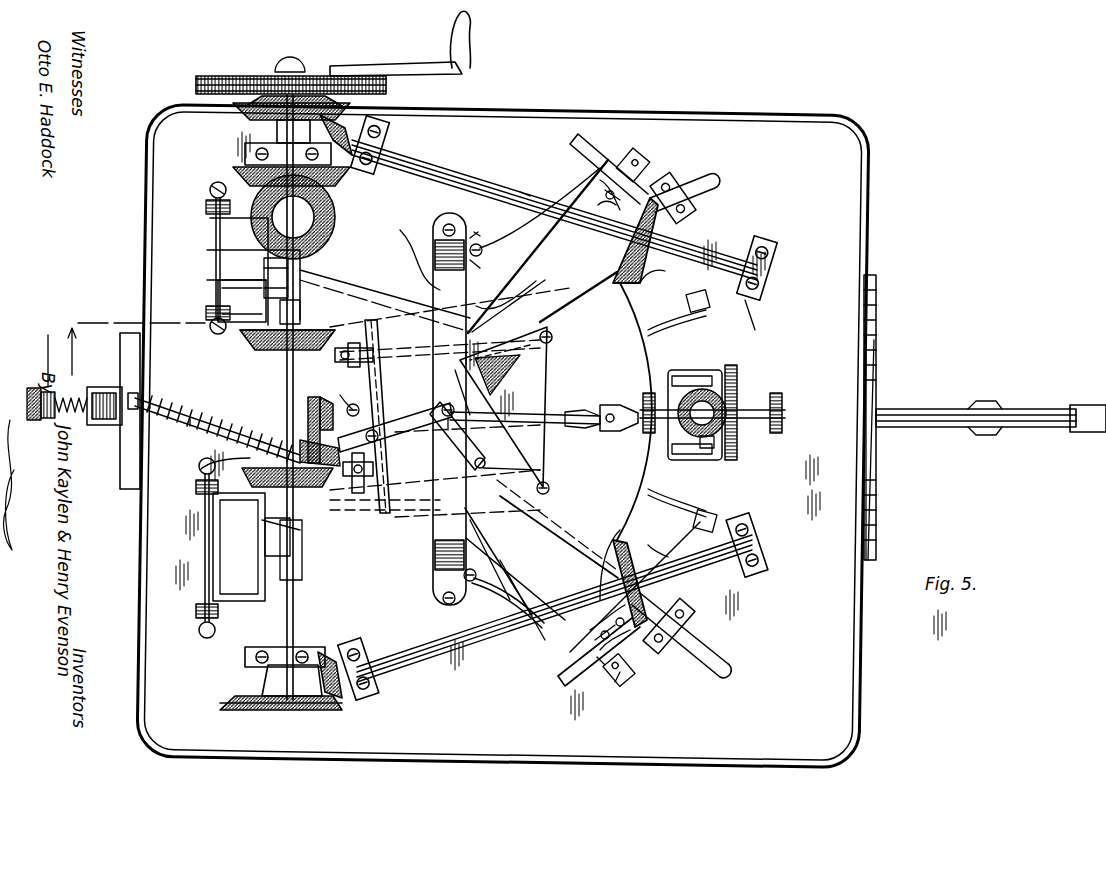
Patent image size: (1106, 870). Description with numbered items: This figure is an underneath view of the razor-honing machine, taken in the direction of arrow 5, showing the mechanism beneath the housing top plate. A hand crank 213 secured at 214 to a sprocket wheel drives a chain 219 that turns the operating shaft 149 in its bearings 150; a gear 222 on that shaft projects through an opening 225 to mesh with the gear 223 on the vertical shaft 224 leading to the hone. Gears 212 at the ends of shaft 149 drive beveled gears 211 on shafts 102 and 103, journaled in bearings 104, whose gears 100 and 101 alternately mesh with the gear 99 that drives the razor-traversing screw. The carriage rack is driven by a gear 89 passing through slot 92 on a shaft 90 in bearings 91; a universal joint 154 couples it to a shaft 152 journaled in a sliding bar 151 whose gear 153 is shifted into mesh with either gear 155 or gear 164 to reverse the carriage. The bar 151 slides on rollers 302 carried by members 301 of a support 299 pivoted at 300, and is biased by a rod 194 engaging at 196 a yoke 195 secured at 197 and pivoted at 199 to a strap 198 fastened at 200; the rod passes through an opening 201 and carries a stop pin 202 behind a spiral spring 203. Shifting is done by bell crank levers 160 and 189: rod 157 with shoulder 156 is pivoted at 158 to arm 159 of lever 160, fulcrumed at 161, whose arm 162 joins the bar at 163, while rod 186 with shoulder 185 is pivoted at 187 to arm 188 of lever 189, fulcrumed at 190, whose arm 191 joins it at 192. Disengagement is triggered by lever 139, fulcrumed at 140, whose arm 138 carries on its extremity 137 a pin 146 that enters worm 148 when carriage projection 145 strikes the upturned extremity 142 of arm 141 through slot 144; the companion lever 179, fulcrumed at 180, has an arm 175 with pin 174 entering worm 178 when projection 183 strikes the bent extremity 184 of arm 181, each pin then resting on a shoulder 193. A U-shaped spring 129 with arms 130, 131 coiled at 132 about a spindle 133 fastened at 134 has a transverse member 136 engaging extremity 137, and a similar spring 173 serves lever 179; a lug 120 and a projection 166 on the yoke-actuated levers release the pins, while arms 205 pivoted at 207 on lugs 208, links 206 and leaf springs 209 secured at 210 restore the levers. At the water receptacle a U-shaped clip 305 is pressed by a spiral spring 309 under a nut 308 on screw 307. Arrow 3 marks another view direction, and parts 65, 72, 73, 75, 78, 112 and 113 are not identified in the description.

The arrow 5 is at (150, 262).
The pin 146 is at (295, 262).
The hand crank 213 is at (418, 70).
The crank securing point 214 is at (300, 62).
The chain 219 is at (215, 76).
The gear 212 is at (258, 76).
The fast gear 222 is at (248, 112).
The bearings 150 is at (275, 148).
The vertically disposed shaft 224 is at (330, 180).
The gear 223 is at (335, 217).
The beveled gear 211 is at (370, 125).
The bearings 104 is at (385, 140).
The opening 225 is at (415, 160).
The shaft 102 is at (525, 192).
The spring arm 131 is at (255, 271).
The spindle fastening 134 is at (210, 182).
The coiled extremities 132 is at (208, 205).
The supporting spindle 133 is at (212, 250).
The free extremity 137 is at (215, 285).
The transverse member 136 is at (264, 268).
The U-shaped spring 129 is at (242, 291).
The spring arm 130 is at (246, 306).
The shoulder 193 is at (213, 512).
The U-shaped spring 173 is at (241, 547).
The pin 174 is at (272, 545).
The opening 201 is at (125, 380).
The U-shaped clip 305 is at (105, 426).
The screw 307 is at (68, 396).
The nut 308 is at (32, 388).
The spiral spring 309 is at (48, 340).
The section line 3 is at (136, 335).
The yoke 195 is at (250, 400).
The rod engagement point 196 is at (195, 412).
The rod 194 is at (195, 428).
The operating shaft 149 is at (287, 347).
The gear 155 is at (278, 352).
The gear 164 is at (305, 490).
The gear 153 is at (308, 410).
The stop pin 202 is at (298, 452).
The spiral spring 203 is at (210, 461).
The short worm 148 is at (307, 313).
The lever arm 175 is at (300, 532).
The worm member 178 is at (309, 550).
The strap fastenings 200 is at (450, 224).
The leaf spring fastening 210 is at (473, 411).
The strap 198 is at (416, 248).
The leaf spring 209 is at (500, 655).
The lever arm 141 is at (540, 210).
The lever arm 138 is at (385, 289).
The pivotal connection 192 is at (385, 282).
The lever 139 is at (504, 289).
The rod 157 is at (542, 246).
The fulcrum 140 is at (510, 306).
The bell crank arm 191 is at (420, 350).
The members 301 is at (450, 402).
The antifrictional rollers 302 is at (349, 450).
The pivotal connection 300 is at (352, 390).
The support 299 is at (394, 416).
The bar 151 is at (380, 410).
The pivotal connection 163 is at (385, 534).
The bell crank arm 162 is at (385, 539).
The fulcrum 190 is at (555, 335).
The bell crank lever 189 is at (520, 355).
The pivotal connection 158 is at (495, 371).
The bell crank arm 188 is at (479, 390).
The bell crank lever 160 is at (567, 484).
The bell crank arm 159 is at (490, 440).
The pivotal connection 187 is at (537, 458).
The shaft 152 is at (555, 412).
The yoke fastening 197 is at (410, 429).
The pivotal connection 199 is at (456, 438).
The universal joint connection 154 is at (596, 426).
The depending bearings 91 is at (645, 400).
The projection 166 is at (640, 412).
The gear 101 is at (619, 552).
The shoulder 156 is at (600, 169).
The arm extremity 142 is at (636, 152).
The link 206 is at (609, 415).
The arm 205 is at (668, 175).
The gear 100 is at (690, 215).
The shoulder 185 is at (710, 615).
The slot 144 is at (599, 670).
The pivotal connection 207 is at (640, 673).
The bent extremity 184 is at (612, 680).
The depending lug 208 is at (628, 690).
The fulcrum 161 is at (559, 537).
The rod 186 is at (541, 550).
The lever 179 is at (501, 561).
The fulcrum 180 is at (493, 560).
The lever arm 181 is at (522, 599).
The shaft 103 is at (606, 587).
The arm 113 is at (700, 376).
The arm 112 is at (690, 454).
The projection 145 is at (690, 305).
The projection 183 is at (695, 518).
The gear 89 is at (735, 372).
The gear 99 is at (725, 430).
The shaft 90 is at (755, 408).
The lug 120 is at (712, 448).
The slot 92 is at (750, 328).
The bracket 73 is at (880, 302).
The plate 72 is at (878, 345).
The brace 75 is at (878, 380).
The shaft 65 is at (912, 408).
The key 78 is at (980, 400).